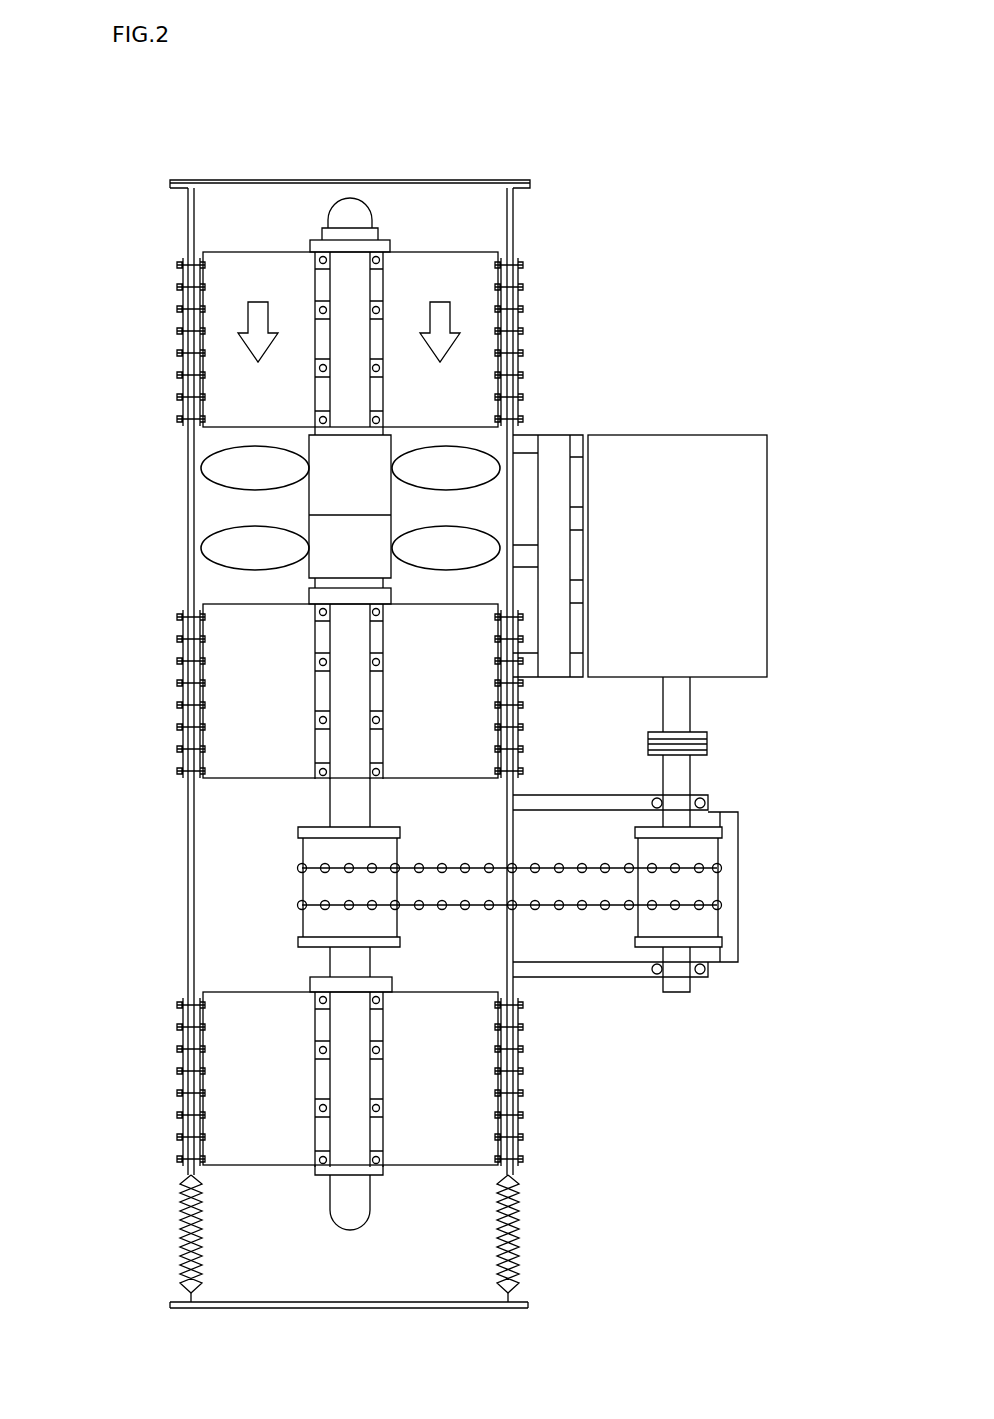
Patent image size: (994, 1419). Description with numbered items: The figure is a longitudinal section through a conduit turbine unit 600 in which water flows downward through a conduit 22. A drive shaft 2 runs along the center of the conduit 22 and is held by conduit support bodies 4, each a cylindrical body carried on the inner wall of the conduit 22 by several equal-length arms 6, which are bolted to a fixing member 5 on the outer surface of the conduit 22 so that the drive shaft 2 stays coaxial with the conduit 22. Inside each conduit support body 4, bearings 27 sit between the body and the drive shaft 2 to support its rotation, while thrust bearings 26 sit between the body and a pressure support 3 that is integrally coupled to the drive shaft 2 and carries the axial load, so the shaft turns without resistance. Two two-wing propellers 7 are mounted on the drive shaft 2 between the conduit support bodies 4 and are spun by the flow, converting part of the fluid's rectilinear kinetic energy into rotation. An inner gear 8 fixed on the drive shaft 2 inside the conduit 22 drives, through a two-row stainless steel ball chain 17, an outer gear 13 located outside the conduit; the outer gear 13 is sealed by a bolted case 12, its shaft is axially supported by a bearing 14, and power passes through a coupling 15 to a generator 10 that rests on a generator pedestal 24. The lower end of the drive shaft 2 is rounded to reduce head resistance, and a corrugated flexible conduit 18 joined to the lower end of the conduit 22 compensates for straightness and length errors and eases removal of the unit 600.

The conduit turbine unit 600 is at (125, 222).
The drive shaft 2 is at (355, 1218).
The pressure support 3 is at (318, 246).
The conduit support body 4 is at (315, 287).
The fixing member 5 is at (178, 323).
The arm 6 is at (463, 262).
The propeller 7 is at (218, 468).
The inner gear 8 is at (313, 848).
The generator 10 is at (722, 447).
The case 12 is at (739, 938).
The outer gear 13 is at (702, 850).
The bearing 14 is at (704, 972).
The coupling 15 is at (707, 735).
The ball chain 17 is at (443, 865).
The flexible conduit 18 is at (183, 1240).
The conduit 22 is at (513, 219).
The generator pedestal 24 is at (553, 440).
The thrust bearing 26 is at (378, 258).
The bearing 27 is at (380, 312).